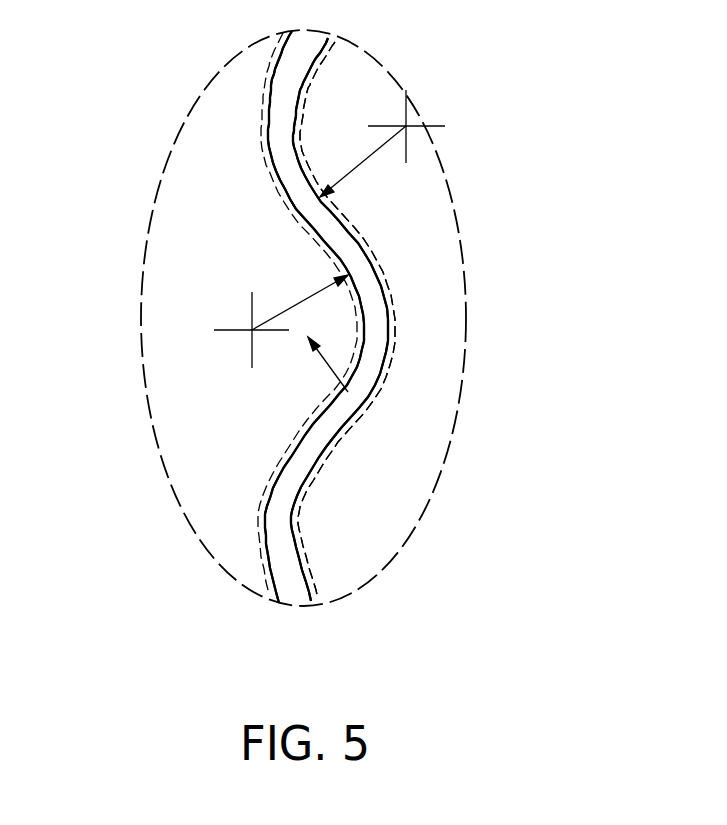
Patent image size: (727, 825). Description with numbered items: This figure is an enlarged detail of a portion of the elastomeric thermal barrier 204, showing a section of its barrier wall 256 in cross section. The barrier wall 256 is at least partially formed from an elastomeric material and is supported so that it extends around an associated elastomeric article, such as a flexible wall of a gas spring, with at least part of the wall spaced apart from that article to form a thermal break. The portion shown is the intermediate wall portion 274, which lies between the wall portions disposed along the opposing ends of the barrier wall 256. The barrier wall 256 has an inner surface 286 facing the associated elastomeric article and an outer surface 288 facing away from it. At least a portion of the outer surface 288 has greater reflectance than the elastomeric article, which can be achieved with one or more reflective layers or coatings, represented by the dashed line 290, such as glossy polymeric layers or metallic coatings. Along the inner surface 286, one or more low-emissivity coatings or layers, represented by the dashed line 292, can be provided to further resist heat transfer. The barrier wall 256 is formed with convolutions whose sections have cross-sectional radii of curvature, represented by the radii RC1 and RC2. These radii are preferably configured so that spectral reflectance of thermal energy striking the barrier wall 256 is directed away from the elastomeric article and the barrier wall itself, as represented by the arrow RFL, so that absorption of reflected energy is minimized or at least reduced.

The elastomeric thermal barrier 204 is at (233, 127).
The barrier wall 256 is at (393, 328).
The intermediate wall portion 274 is at (350, 238).
The inner surface 286 is at (292, 513).
The outer surface 288 is at (272, 482).
The reflective layers or coatings 290 is at (285, 448).
The low-emissivity coatings or layers 292 is at (359, 430).
The radius of curvature RC1 is at (300, 293).
The radius of curvature RC2 is at (363, 161).
The arrow representing reflected thermal energy RFL is at (348, 392).